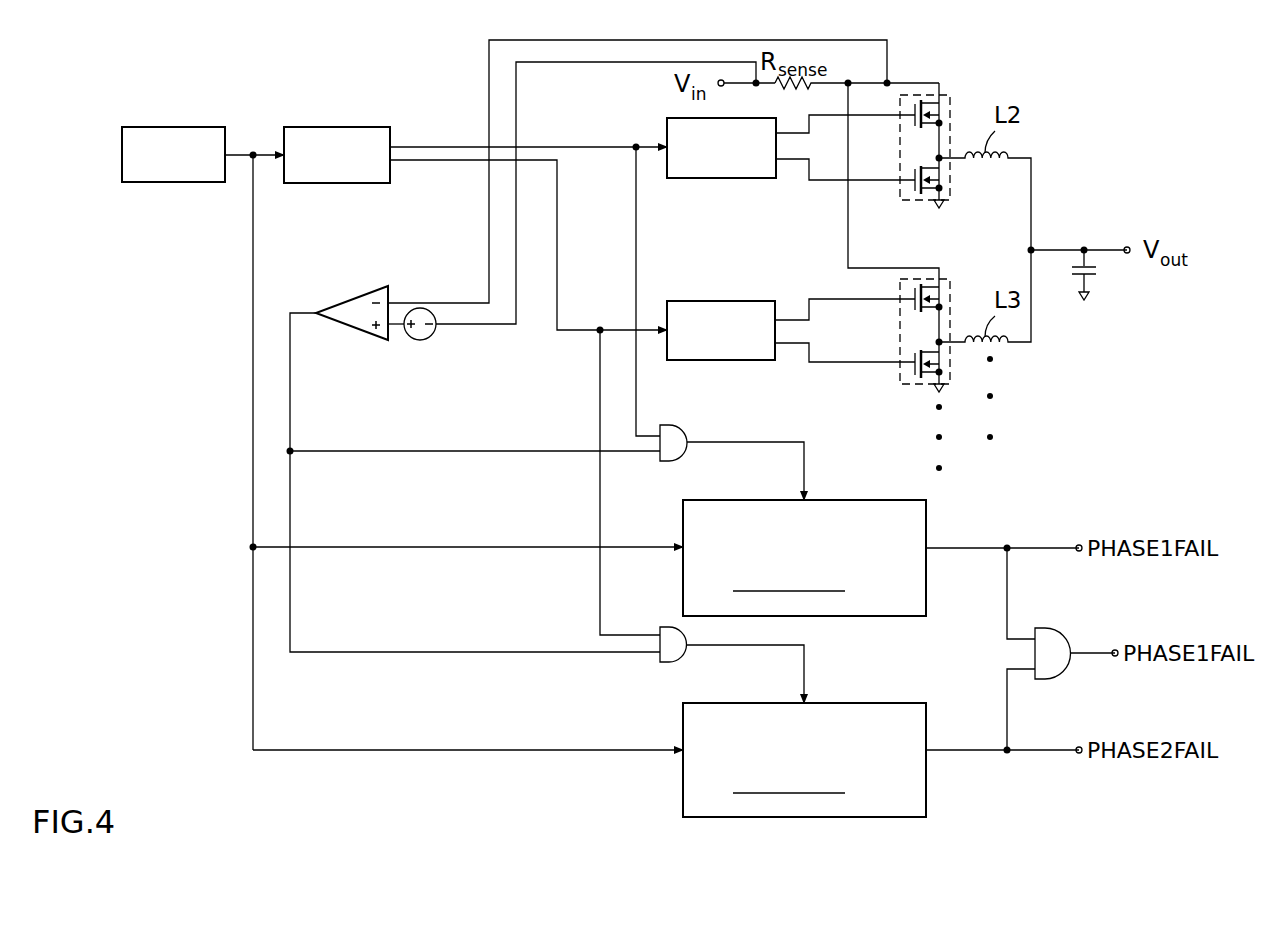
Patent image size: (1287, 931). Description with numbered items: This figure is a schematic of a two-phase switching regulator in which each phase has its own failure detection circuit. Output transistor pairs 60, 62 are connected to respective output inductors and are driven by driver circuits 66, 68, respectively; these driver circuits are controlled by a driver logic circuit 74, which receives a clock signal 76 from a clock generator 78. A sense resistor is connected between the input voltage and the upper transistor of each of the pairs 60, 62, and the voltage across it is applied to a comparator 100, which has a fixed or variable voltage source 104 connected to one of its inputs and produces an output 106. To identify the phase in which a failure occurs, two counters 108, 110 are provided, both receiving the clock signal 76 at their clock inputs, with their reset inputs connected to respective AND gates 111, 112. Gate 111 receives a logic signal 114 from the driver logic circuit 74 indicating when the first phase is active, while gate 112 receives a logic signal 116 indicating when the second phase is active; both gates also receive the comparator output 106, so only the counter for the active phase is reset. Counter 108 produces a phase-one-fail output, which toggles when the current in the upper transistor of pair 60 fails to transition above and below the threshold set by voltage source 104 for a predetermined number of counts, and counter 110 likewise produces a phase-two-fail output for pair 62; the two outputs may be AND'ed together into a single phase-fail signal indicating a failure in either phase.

The clock generator 78 is at (165, 127).
The driver logic circuit 74 is at (360, 127).
The clock signal 76 is at (243, 152).
The comparator 100 is at (358, 297).
The voltage source 104 is at (432, 337).
The comparator output 106 is at (290, 375).
The driver circuit 66 is at (717, 178).
The driver circuit 68 is at (717, 360).
The output transistor pair 60 is at (951, 120).
The output transistor pair 62 is at (951, 304).
The logic signal 114 is at (636, 378).
The logic signal 116 is at (600, 572).
The AND gate 111 is at (678, 425).
The AND gate 112 is at (678, 662).
The counter 108 is at (926, 523).
The counter 110 is at (926, 726).